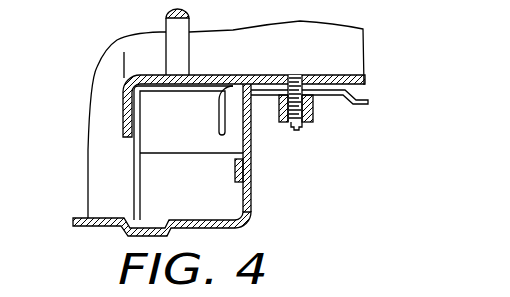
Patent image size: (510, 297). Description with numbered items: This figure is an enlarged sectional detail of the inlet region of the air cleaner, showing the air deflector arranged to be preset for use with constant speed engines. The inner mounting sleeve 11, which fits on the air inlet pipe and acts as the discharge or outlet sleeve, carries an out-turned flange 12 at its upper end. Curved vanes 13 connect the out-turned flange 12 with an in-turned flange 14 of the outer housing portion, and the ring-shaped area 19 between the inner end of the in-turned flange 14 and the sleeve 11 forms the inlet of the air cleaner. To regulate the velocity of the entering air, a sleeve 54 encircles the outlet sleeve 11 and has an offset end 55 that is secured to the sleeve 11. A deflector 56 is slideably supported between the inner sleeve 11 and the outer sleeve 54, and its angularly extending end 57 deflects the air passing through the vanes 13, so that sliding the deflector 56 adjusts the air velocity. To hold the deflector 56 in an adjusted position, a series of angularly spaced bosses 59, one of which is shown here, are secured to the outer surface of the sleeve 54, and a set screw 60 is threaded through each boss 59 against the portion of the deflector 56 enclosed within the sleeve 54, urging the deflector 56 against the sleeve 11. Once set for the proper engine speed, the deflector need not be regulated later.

The inner mounting sleeve 11 is at (236, 77).
The out-turned flange 12 is at (127, 103).
The curved vanes 13 is at (215, 143).
The in-turned flange 14 is at (251, 204).
The ring-shaped area 19 is at (253, 93).
The sleeve 54 is at (322, 101).
The offset end 55 is at (358, 92).
The deflector 56 is at (310, 78).
The angularly extending end 57 is at (213, 128).
The boss 59 is at (285, 130).
The set screw 60 is at (300, 130).